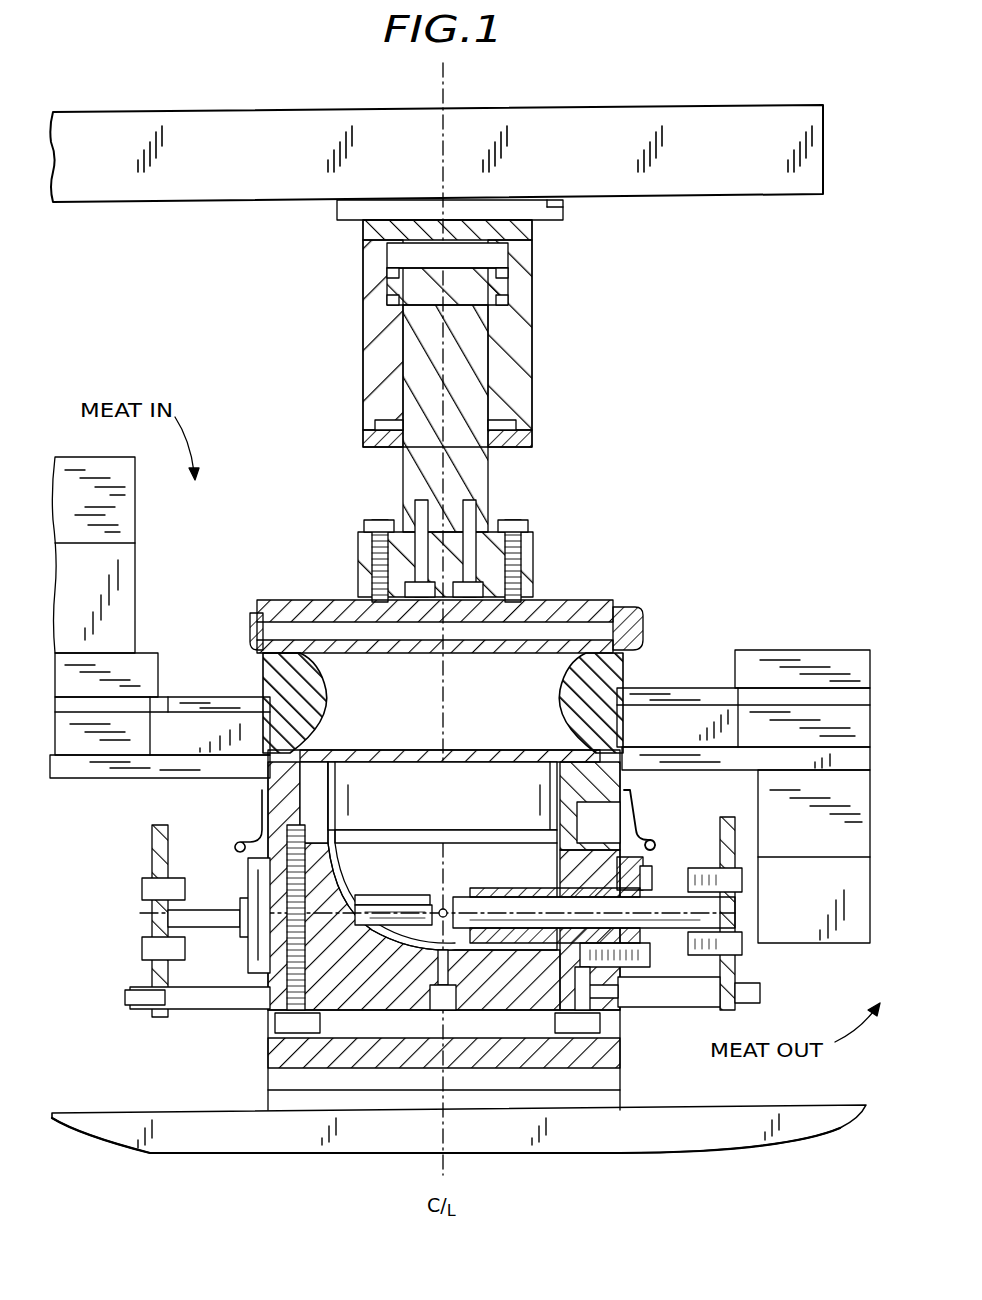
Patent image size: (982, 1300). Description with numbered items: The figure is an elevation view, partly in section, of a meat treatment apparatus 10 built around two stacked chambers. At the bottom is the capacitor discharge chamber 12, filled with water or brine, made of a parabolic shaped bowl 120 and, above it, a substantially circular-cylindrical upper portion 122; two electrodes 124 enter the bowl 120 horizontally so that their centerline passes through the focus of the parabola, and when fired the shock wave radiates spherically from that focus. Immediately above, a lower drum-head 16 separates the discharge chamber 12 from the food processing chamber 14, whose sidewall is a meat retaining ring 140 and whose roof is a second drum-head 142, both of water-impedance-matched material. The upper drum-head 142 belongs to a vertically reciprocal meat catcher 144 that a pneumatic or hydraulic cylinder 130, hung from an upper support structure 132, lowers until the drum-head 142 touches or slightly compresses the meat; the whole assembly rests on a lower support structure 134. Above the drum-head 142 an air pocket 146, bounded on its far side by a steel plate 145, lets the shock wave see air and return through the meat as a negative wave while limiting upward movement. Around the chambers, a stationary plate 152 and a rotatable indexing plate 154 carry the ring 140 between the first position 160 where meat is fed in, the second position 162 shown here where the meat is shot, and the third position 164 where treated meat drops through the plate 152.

The meat treatment apparatus 10 is at (188, 1042).
The capacitor discharge chamber 12 is at (499, 804).
The food processing chamber 14 is at (518, 730).
The drum-head 16 is at (385, 750).
The parabolic shaped bowl 120 is at (350, 870).
The upper portion 122 is at (340, 790).
The electrodes 124 is at (440, 905).
The pneumatic or hydraulic cylinder 130 is at (556, 340).
The upper support structure 132 is at (232, 184).
The lower support structure 134 is at (655, 1121).
The meat retaining ring 140 is at (322, 680).
The second drum-head 142 is at (504, 655).
The meat catcher 144 is at (645, 605).
The steel plate 145 is at (552, 602).
The air pocket 146 is at (262, 658).
The stationary plate 152 is at (682, 770).
The rotatable indexing plate 154 is at (678, 688).
The first position 160 is at (145, 628).
The second position 162 is at (228, 810).
The third position 164 is at (772, 642).